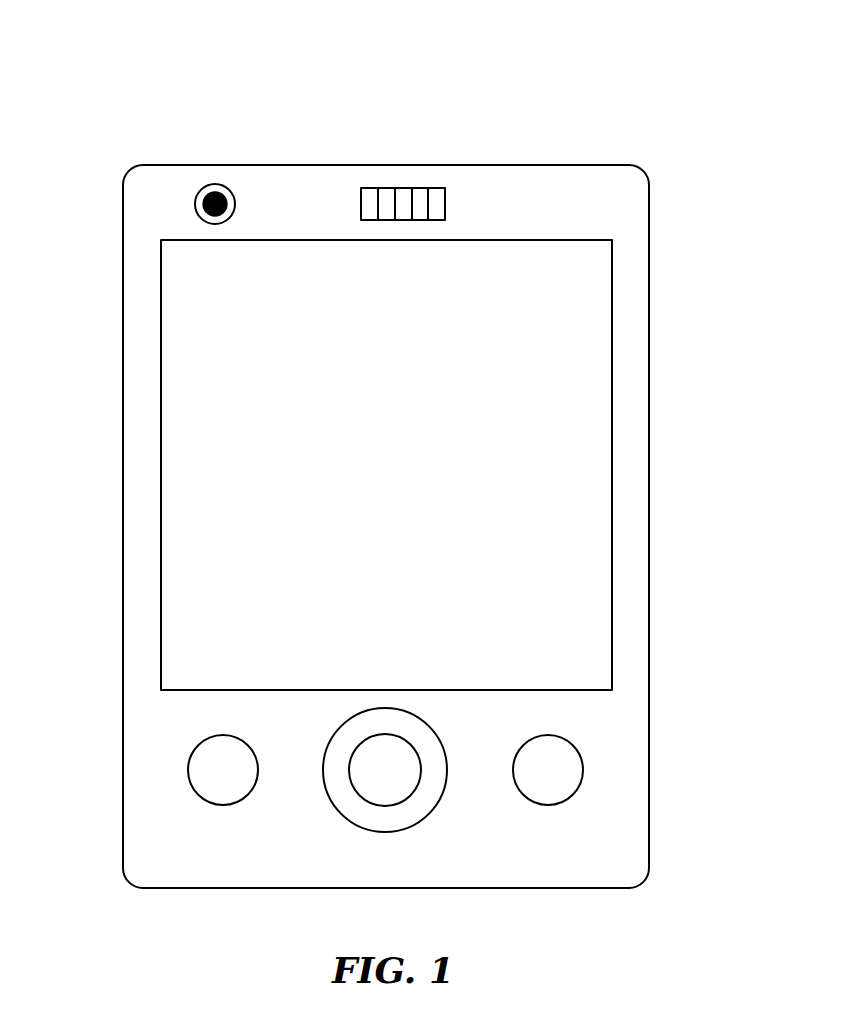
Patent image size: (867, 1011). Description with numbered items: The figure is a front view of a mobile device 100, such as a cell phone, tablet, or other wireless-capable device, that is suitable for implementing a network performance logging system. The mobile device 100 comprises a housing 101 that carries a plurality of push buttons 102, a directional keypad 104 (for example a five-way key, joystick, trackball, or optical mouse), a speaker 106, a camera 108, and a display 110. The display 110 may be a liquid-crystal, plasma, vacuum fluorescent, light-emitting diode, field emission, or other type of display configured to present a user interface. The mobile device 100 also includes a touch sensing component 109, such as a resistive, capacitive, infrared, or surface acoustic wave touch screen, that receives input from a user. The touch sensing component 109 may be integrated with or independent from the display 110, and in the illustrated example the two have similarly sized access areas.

The mobile device 100 is at (648, 108).
The housing 101 is at (628, 709).
The push buttons 102 is at (188, 765).
The directional keypad 104 is at (443, 795).
The speaker 106 is at (402, 188).
The camera 108 is at (215, 184).
The touch sensing component 109 is at (612, 463).
The display 110 is at (582, 376).